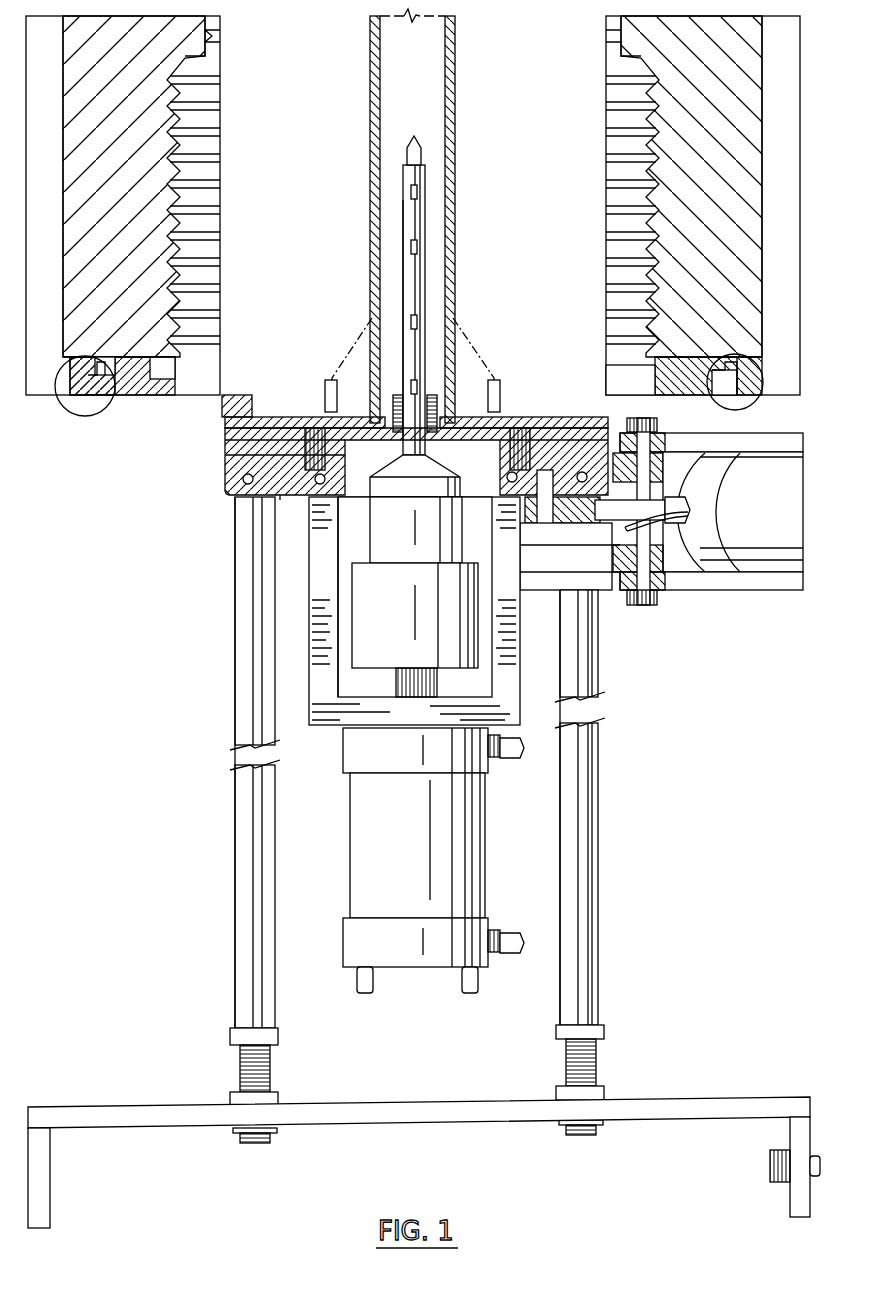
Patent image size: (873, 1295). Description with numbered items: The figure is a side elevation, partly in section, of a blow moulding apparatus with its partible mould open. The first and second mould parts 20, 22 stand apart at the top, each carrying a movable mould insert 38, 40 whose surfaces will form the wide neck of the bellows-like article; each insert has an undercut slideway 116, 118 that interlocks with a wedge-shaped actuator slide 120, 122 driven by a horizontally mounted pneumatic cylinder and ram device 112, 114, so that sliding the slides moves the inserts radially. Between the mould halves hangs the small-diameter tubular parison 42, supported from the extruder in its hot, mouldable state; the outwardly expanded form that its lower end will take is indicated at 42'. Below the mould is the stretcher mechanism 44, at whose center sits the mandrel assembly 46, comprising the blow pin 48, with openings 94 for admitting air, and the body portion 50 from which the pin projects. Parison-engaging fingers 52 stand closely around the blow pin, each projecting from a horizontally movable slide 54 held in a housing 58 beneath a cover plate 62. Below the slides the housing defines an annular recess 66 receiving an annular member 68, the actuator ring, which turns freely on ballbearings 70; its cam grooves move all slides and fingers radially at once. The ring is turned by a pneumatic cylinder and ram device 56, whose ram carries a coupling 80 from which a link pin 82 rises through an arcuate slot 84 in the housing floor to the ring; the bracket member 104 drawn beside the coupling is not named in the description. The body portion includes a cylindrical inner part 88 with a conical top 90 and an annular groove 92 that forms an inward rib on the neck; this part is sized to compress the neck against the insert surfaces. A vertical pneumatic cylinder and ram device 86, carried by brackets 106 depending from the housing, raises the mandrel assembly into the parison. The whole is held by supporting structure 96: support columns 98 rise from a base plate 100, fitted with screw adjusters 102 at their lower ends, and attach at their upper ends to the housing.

The first mould part 20 is at (222, 33).
The second mould part 22 is at (606, 32).
The movable mould insert 38 is at (132, 378).
The movable mould insert 40 is at (700, 380).
The tubular parison 42 is at (436, 216).
The expanded lower end portion of parison 42' is at (424, 360).
The stretcher mechanism 44 is at (380, 454).
The mandrel assembly 46 is at (432, 270).
The blow pin 48 is at (425, 180).
The body portion of mandrel assembly 50 is at (350, 550).
The parison engaging fingers 52 is at (394, 405).
The horizontally movable slides 54 is at (312, 428).
The pneumatic cylinder and ram device 56 is at (680, 488).
The housing 58 is at (228, 497).
The cover plate 62 is at (270, 420).
The annular recess 66 is at (288, 497).
The annular member (actuator ring) 68 is at (218, 438).
The ballbearings 70 is at (243, 481).
The coupling 80 is at (580, 524).
The link pin 82 is at (552, 542).
The arcuate slot 84 is at (560, 428).
The pneumatic cylinder and ram device 86 is at (433, 860).
The inner part of mandrel body 88 is at (415, 597).
The conical top 90 is at (432, 470).
The annular groove 92 is at (460, 493).
The openings 94 is at (411, 320).
The supporting structure 96 is at (228, 930).
The support columns 98 is at (237, 833).
The base plate 100 is at (426, 1106).
The screw adjusters 102 is at (240, 1066).
The bracket beam 104 is at (565, 574).
The brackets 106 is at (300, 637).
The pneumatic cylinder and ram device 112 is at (85, 415).
The pneumatic cylinder and ram device 114 is at (738, 400).
The undercut slideway 116 is at (97, 357).
The undercut slideway 118 is at (735, 358).
The actuator slide 120 is at (85, 378).
The actuator slide 122 is at (745, 377).